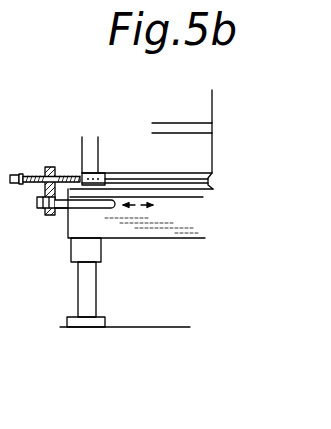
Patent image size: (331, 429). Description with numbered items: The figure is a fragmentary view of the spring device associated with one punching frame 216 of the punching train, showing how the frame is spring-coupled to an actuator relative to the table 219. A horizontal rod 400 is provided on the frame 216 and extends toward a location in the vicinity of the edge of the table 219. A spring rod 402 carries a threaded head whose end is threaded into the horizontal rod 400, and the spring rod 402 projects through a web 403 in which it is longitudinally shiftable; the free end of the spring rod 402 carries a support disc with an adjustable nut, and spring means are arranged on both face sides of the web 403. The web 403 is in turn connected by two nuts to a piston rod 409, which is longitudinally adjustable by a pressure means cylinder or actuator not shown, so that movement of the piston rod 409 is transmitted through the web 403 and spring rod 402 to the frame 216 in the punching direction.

The frame 216 is at (216, 108).
The horizontal rod 400 is at (163, 183).
The spring rod 402 is at (34, 171).
The web 403 is at (51, 163).
The piston rod 409 is at (83, 205).
The table 219 is at (173, 230).